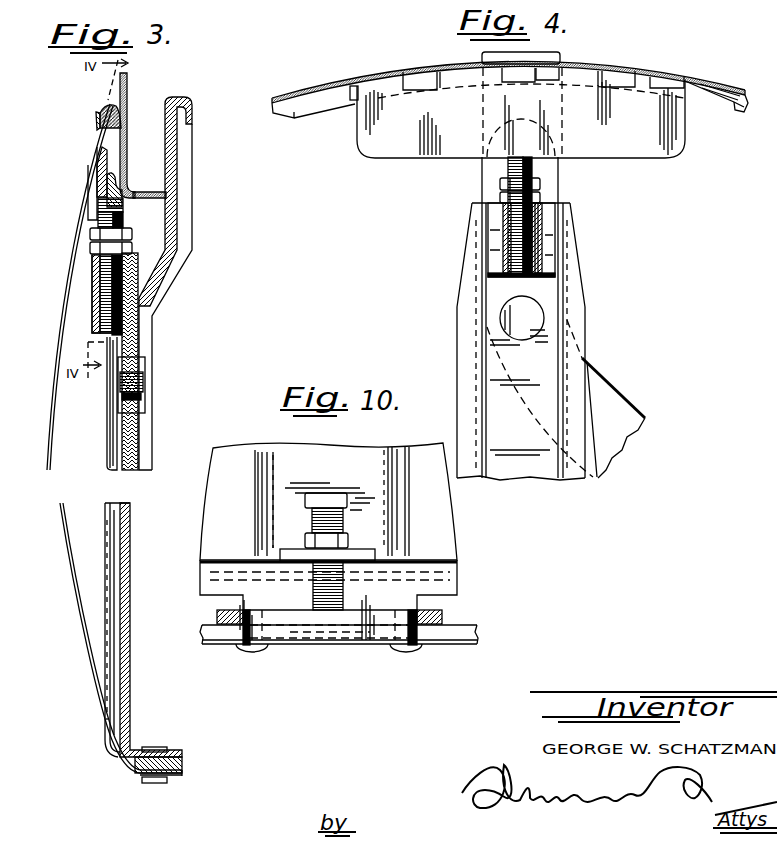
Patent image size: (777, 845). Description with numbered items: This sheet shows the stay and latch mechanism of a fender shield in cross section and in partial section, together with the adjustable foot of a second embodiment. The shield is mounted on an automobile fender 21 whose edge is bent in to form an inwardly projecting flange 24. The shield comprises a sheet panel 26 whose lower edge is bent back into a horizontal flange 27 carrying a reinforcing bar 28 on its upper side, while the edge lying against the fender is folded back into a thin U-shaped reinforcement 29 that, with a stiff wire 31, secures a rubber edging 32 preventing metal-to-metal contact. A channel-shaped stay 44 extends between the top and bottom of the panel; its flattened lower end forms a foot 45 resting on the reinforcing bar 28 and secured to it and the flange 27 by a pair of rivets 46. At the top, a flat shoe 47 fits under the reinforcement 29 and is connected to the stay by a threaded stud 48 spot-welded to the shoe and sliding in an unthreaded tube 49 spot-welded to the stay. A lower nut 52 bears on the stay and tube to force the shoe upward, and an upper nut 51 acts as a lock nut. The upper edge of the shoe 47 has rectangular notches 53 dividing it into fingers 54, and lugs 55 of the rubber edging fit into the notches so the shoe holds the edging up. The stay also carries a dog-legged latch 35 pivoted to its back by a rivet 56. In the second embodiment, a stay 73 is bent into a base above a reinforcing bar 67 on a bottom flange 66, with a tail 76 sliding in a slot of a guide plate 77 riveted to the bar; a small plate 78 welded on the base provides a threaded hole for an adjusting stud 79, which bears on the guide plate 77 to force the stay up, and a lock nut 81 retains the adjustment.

In FIG. 3, the automobile fender 21 is at (128, 86).
In FIG. 3, the inwardly projecting flange 24 is at (148, 192).
In FIG. 3, the sheet panel 26 is at (59, 327).
In FIG. 3, the horizontal flange 27 is at (174, 778).
In FIG. 3, the reinforcing bar 28 is at (181, 765).
In FIG. 3, the U-shaped reinforcement 29 is at (110, 105).
In FIG. 4, the U-shaped reinforcement 29 is at (734, 101).
In FIG. 3, the stiff wire 31 is at (82, 196).
In FIG. 3, the rubber edging 32 is at (99, 115).
In FIG. 4, the rubber edging 32 is at (710, 90).
In FIG. 3, the latch 35 is at (183, 243).
In FIG. 4, the latch 35 is at (615, 411).
In FIG. 3, the stay 44 is at (116, 652).
In FIG. 4, the stay 44 is at (469, 328).
In FIG. 3, the foot 45 is at (167, 753).
In FIG. 3, the rivets 46 is at (152, 786).
In FIG. 3, the shoe 47 is at (96, 157).
In FIG. 4, the shoe 47 is at (357, 149).
In FIG. 3, the stud 48 is at (122, 207).
In FIG. 4, the stud 48 is at (527, 163).
In FIG. 3, the tube 49 is at (97, 282).
In FIG. 4, the tube 49 is at (548, 240).
In FIG. 3, the upper nut 51 is at (90, 235).
In FIG. 4, the upper nut 51 is at (502, 183).
In FIG. 3, the lower nut 52 is at (92, 248).
In FIG. 4, the lower nut 52 is at (502, 195).
In FIG. 4, the rectangular notches 53 is at (436, 77).
In FIG. 4, the fingers 54 is at (393, 80).
In FIG. 4, the lugs 55 is at (420, 77).
In FIG. 3, the rivet 56 is at (133, 378).
In FIG. 4, the rivet 56 is at (528, 308).
In FIG. 10, the horizontal flange 66 is at (462, 644).
In FIG. 10, the reinforcing bar 67 is at (467, 633).
In FIG. 10, the stay 73 is at (436, 523).
In FIG. 10, the tail 76 is at (306, 638).
In FIG. 10, the guide plate 77 is at (441, 618).
In FIG. 10, the small plate 78 is at (376, 557).
In FIG. 10, the adjusting stud 79 is at (322, 497).
In FIG. 10, the lock nut 81 is at (348, 543).